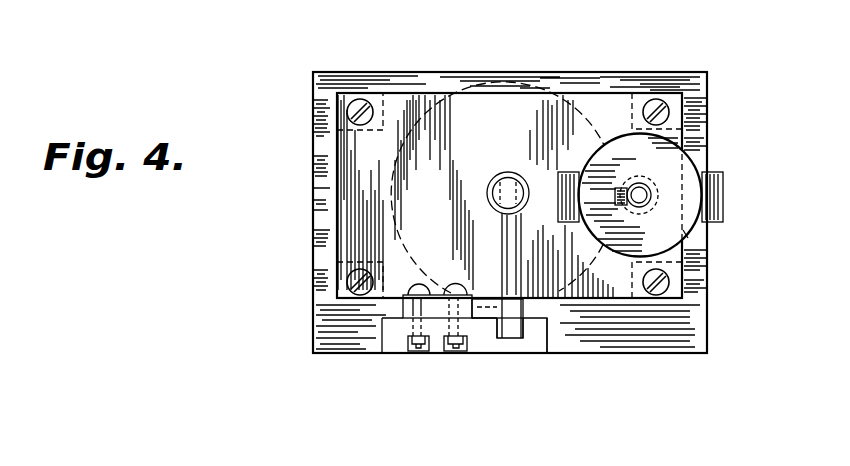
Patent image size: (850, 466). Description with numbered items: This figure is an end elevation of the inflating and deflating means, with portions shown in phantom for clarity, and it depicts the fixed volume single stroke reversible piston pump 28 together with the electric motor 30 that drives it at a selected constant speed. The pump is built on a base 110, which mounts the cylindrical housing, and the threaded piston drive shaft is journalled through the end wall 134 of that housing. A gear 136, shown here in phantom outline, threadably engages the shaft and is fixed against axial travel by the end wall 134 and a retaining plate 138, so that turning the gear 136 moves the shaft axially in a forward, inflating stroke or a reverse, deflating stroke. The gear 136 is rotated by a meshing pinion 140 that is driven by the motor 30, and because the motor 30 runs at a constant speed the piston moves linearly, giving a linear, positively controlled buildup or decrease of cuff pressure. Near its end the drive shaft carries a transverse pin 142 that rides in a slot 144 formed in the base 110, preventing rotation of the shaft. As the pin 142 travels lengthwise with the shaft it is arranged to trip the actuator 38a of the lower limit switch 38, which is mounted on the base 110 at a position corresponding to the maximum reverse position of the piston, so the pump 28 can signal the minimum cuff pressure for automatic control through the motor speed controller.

The reversible piston pump 28 is at (733, 82).
The electric motor 30 is at (690, 160).
The lower limit switch 38 is at (437, 295).
The actuator of lower limit switch 38a is at (528, 310).
The base 110 is at (536, 344).
The end wall 134 is at (330, 322).
The gear 136 is at (565, 70).
The retaining plate 138 is at (345, 238).
The pinion 140 is at (620, 218).
The transverse pin 142 is at (522, 262).
The slot 144 is at (493, 337).